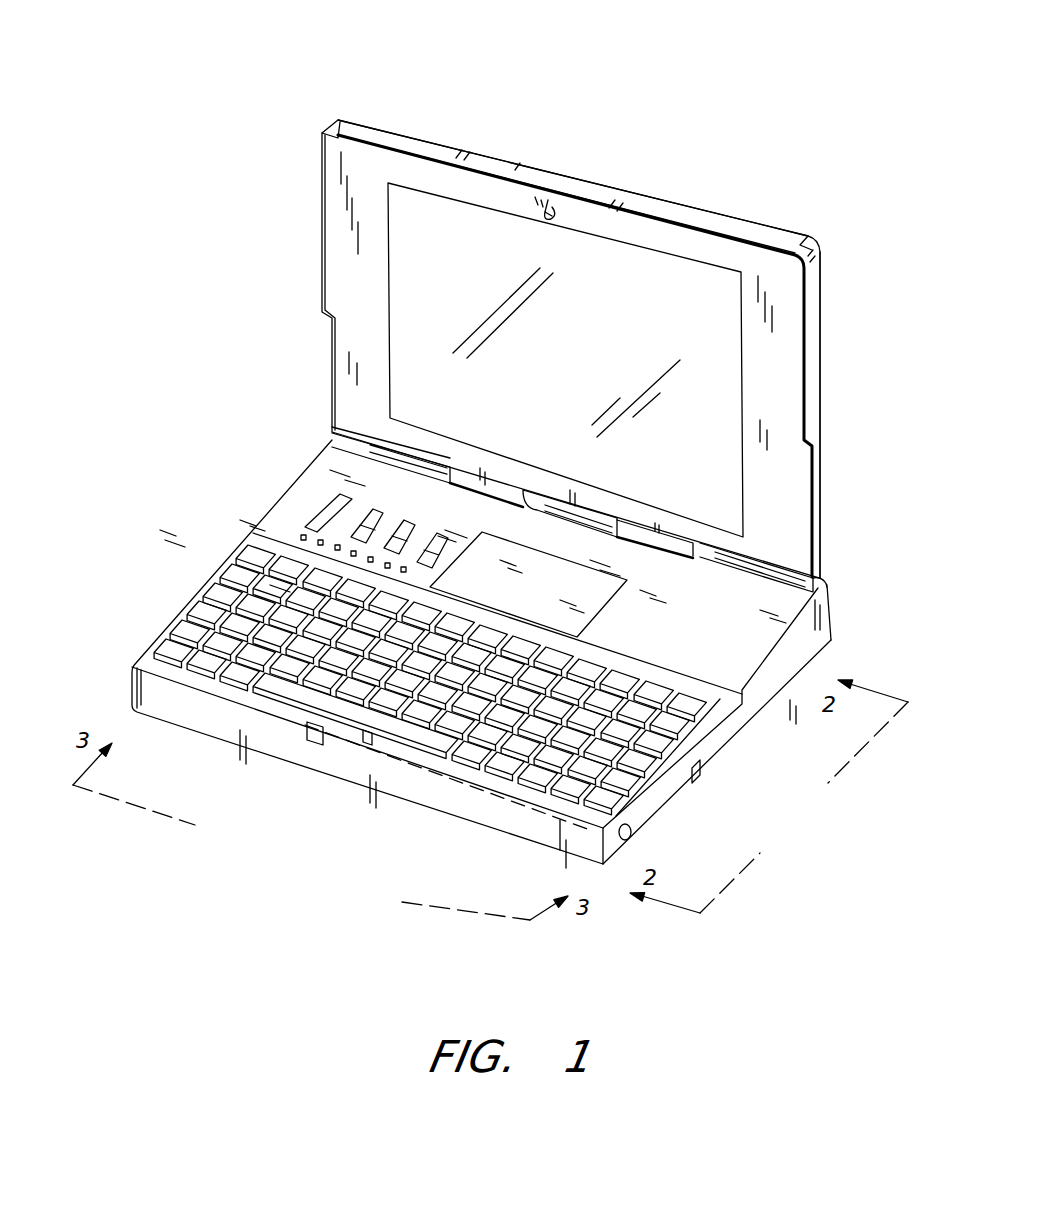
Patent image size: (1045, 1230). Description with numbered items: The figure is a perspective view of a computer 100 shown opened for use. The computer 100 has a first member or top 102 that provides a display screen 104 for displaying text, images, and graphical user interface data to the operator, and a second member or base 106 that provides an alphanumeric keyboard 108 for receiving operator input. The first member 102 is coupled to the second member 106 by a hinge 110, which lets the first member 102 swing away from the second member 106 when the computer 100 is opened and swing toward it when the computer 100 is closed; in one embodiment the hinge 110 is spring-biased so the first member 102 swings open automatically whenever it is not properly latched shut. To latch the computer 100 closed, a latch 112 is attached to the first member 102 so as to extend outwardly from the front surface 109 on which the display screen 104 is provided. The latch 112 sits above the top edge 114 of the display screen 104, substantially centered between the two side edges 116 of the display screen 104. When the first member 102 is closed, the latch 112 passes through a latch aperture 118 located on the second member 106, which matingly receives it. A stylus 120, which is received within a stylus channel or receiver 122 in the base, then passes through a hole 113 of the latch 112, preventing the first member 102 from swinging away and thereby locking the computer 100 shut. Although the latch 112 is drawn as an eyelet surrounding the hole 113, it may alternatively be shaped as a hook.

The computer 100 is at (727, 50).
The first member 102 is at (635, 196).
The display screen 104 is at (710, 343).
The second member 106 is at (133, 695).
The alphanumeric keyboard 108 is at (222, 553).
The front surface 109 is at (396, 170).
The hinge 110 is at (830, 584).
The latch 112 is at (534, 203).
The hole 113 is at (553, 207).
The top edge 114 is at (695, 262).
The side edges 116 is at (746, 406).
The latch aperture 118 is at (367, 732).
The stylus 120 is at (606, 866).
The stylus channel 122 is at (470, 806).